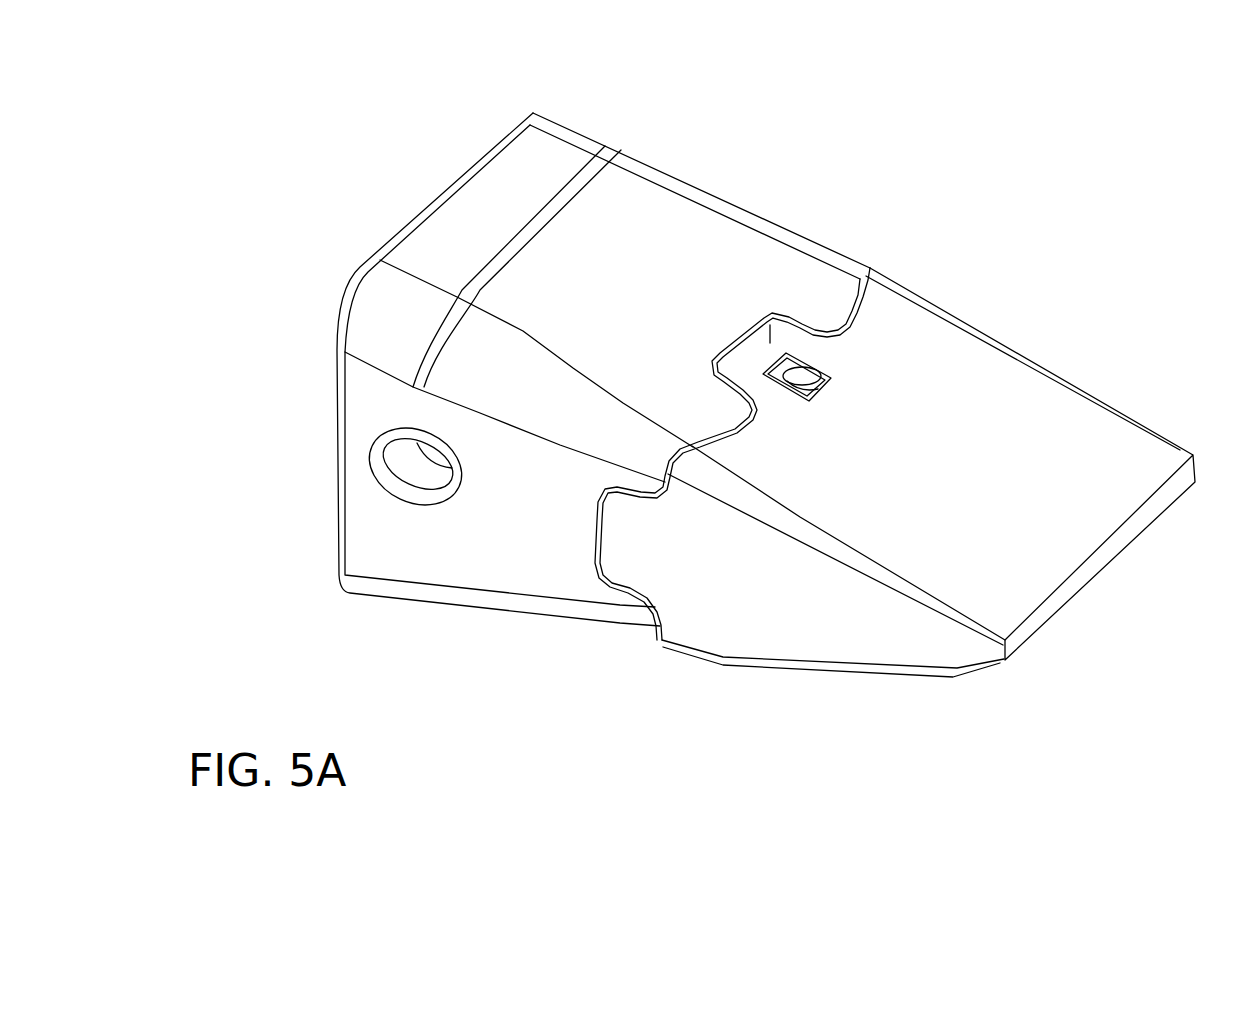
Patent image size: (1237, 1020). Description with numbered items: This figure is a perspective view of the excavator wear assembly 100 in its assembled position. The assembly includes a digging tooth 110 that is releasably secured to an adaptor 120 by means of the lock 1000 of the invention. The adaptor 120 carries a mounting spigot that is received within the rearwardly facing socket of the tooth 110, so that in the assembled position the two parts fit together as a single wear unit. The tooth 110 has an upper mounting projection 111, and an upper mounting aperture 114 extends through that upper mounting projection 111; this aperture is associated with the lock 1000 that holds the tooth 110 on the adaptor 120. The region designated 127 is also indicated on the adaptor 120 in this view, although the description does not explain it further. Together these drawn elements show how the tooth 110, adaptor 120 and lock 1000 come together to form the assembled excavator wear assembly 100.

The excavator wear assembly 100 is at (775, 377).
The digging tooth 110 is at (938, 430).
The adaptor 120 is at (627, 359).
The notch 127 is at (744, 345).
The upper mounting projection 111 is at (773, 317).
The upper mounting aperture 114 is at (833, 377).
The lock 1000 is at (818, 366).